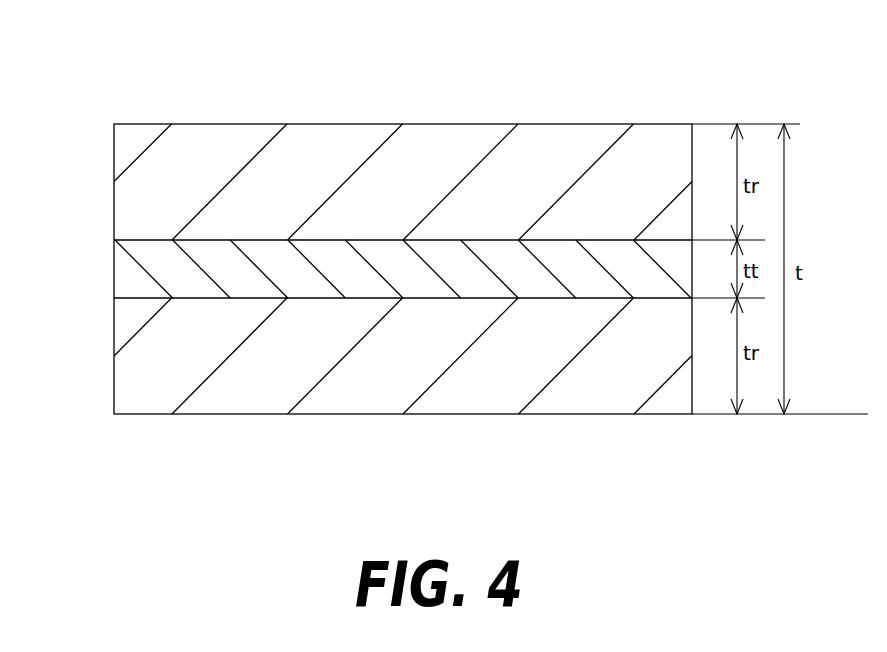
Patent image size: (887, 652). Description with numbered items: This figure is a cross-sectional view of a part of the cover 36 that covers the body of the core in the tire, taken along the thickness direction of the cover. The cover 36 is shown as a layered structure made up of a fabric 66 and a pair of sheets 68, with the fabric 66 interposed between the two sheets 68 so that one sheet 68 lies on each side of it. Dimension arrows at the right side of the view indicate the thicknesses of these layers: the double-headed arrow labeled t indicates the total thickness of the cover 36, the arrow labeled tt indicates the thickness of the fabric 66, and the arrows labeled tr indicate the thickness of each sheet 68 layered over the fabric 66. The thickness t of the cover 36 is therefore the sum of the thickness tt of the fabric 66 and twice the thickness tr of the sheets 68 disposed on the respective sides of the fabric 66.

The cover 36 is at (178, 121).
The fabric 66 is at (133, 271).
The sheet 68 is at (133, 198).